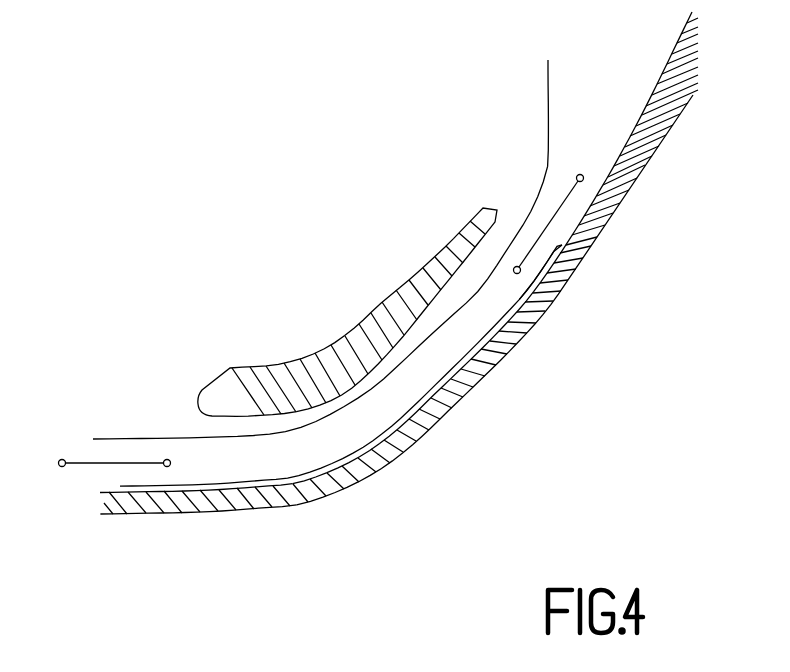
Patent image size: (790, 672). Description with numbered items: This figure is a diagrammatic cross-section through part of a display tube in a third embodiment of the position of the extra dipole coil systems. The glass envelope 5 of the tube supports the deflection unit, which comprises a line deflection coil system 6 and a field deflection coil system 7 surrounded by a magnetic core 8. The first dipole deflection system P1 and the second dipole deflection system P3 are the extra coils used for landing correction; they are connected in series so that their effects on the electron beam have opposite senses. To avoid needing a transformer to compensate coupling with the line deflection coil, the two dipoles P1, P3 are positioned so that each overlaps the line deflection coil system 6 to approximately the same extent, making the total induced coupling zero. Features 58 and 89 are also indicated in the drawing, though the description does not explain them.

The glass envelope 5 is at (672, 113).
The line deflection coil system 6 is at (147, 493).
The field deflection coil system 7 is at (138, 438).
The magnetic core 8 is at (350, 348).
The liner layer 58 is at (393, 425).
The liner end portion 89 is at (516, 298).
The first dipole deflection system P1 is at (102, 460).
The second dipole deflection system P3 is at (551, 227).